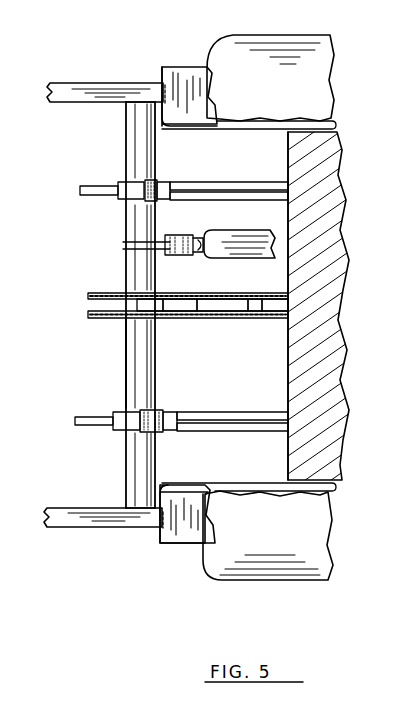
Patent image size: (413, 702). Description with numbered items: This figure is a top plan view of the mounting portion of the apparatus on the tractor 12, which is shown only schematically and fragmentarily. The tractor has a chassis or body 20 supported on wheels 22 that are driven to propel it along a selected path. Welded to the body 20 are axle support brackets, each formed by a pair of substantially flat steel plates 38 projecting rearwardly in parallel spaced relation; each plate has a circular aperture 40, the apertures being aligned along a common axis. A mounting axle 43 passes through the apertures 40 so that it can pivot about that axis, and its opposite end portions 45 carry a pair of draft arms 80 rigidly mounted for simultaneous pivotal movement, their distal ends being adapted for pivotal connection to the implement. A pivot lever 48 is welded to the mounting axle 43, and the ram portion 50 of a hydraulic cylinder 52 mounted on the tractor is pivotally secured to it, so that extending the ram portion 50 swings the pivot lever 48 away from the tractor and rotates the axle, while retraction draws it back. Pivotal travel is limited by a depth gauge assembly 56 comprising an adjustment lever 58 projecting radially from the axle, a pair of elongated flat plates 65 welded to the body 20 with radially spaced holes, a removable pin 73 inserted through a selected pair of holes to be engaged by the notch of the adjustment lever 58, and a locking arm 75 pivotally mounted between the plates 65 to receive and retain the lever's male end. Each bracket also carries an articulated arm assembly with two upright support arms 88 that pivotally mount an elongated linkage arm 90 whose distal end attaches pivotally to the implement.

The tractor 12 is at (307, 302).
The body 20 is at (287, 348).
The wheels 22 is at (313, 98).
The plates 38 is at (210, 182).
The aperture 40 is at (135, 168).
The mounting axle 43 is at (137, 360).
The end portions 45 is at (130, 107).
The pivot lever 48 is at (142, 242).
The ram portion 50 is at (204, 254).
The hydraulic cylinder 52 is at (243, 247).
The depth gauge assembly 56 is at (188, 318).
The adjustment lever 58 is at (155, 306).
The plates 65 is at (118, 293).
The pin 73 is at (135, 304).
The locking arm 75 is at (198, 306).
The draft arms 80 is at (98, 85).
The support arms 88 is at (155, 182).
The linkage arm 90 is at (102, 185).